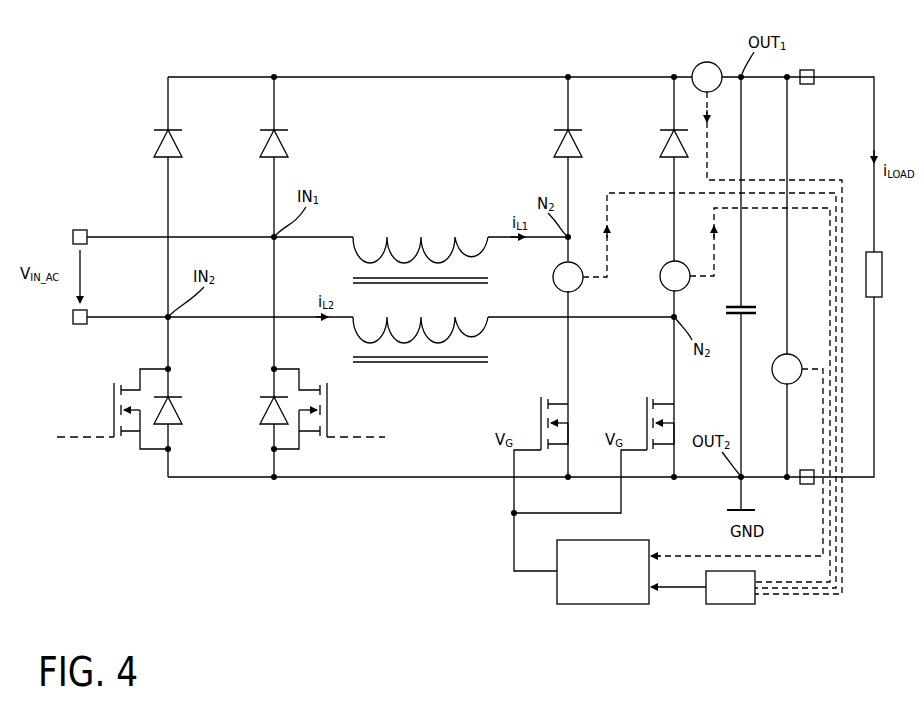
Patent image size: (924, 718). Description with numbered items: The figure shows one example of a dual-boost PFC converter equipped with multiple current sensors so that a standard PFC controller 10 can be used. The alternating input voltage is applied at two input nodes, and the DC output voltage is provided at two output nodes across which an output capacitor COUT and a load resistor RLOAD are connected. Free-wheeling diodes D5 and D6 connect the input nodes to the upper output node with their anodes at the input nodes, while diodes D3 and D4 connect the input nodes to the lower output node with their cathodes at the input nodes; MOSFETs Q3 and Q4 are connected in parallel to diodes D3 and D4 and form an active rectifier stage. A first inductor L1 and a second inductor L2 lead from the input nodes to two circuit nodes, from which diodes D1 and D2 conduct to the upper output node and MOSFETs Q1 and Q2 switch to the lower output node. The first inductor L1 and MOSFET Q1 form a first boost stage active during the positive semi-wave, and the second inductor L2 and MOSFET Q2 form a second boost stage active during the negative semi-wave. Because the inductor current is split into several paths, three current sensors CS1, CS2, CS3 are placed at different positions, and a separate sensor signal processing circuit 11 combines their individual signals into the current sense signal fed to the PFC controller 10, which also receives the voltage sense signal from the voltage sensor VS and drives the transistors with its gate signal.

The PFC controller 10 is at (582, 606).
The sensor signal processing circuit 11 is at (741, 624).
The diode D1 is at (561, 134).
The diode D2 is at (668, 134).
The diode D3 is at (179, 402).
The diode D4 is at (262, 402).
The free-wheeling diode D5 is at (178, 134).
The free-wheeling diode D6 is at (284, 134).
The MOSFET Q1 is at (541, 418).
The MOSFET Q2 is at (647, 418).
The MOSFET Q3 is at (112, 419).
The MOSFET Q4 is at (329, 419).
The first inductor L1 is at (406, 260).
The second inductor L2 is at (432, 339).
The current sensor CS1 is at (582, 285).
The current sensor CS2 is at (661, 277).
The current sensor CS3 is at (696, 66).
The voltage sensor VS is at (798, 356).
The output capacitor COUT is at (752, 299).
The load resistor RLOAD is at (893, 261).